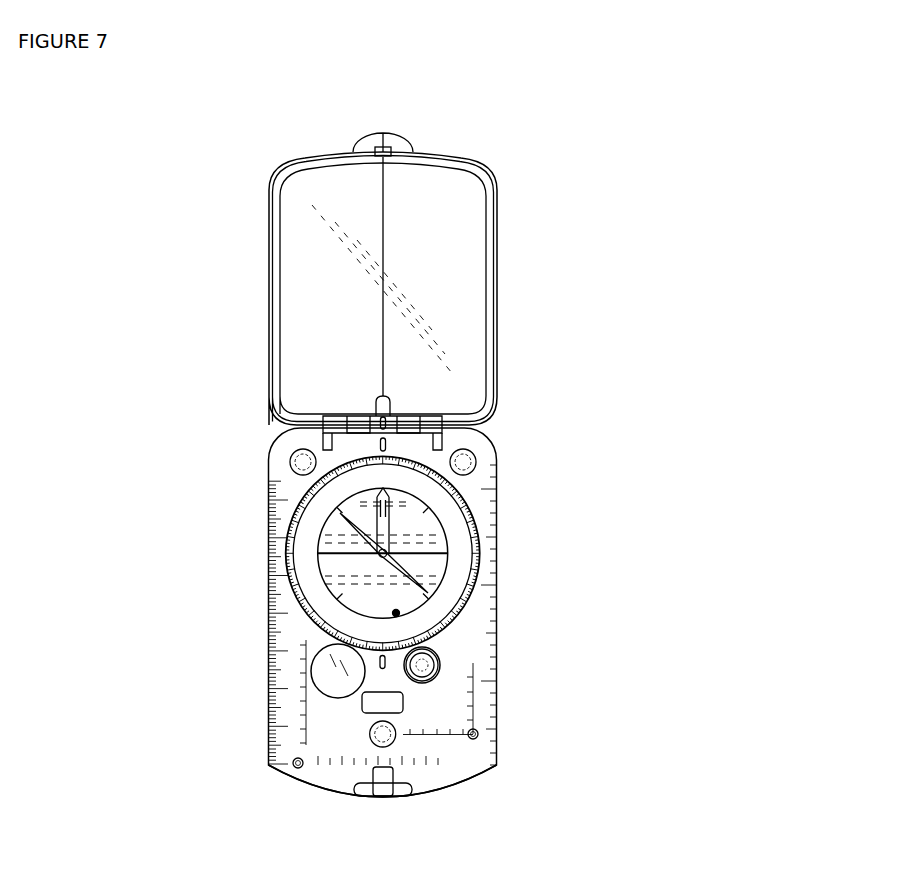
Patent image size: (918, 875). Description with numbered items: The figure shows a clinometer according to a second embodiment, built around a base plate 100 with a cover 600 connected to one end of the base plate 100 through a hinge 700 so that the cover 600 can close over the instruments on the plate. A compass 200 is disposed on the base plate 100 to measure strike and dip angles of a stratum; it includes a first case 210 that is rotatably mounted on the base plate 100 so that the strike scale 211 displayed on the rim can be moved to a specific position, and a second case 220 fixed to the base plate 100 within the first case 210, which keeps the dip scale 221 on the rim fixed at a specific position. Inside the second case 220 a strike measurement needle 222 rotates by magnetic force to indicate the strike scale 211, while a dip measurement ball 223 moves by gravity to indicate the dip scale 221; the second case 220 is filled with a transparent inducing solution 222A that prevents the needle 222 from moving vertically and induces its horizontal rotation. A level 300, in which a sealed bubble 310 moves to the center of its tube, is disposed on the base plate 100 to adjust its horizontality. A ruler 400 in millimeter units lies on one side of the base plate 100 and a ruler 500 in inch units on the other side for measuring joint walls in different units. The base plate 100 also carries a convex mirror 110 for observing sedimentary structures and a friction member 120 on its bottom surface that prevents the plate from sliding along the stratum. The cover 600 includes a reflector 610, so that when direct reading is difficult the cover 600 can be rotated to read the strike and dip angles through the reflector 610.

The base plate 100 is at (499, 445).
The convex mirror 110 is at (318, 693).
The friction member 120 is at (300, 430).
The compass 200 is at (298, 491).
The first case 210 is at (268, 528).
The strike scale 211 is at (283, 550).
The second case 220 is at (268, 585).
The dip scale 221 is at (280, 604).
The strike measurement needle 222 is at (472, 553).
The transparent inducing solution 222A is at (445, 520).
The dip measurement ball 223 is at (470, 596).
The level 300 is at (440, 641).
The bubble 310 is at (441, 658).
The ruler 400 is at (276, 770).
The ruler 500 is at (497, 760).
The cover 600 is at (480, 167).
The reflector 610 is at (440, 213).
The hinge 700 is at (334, 409).